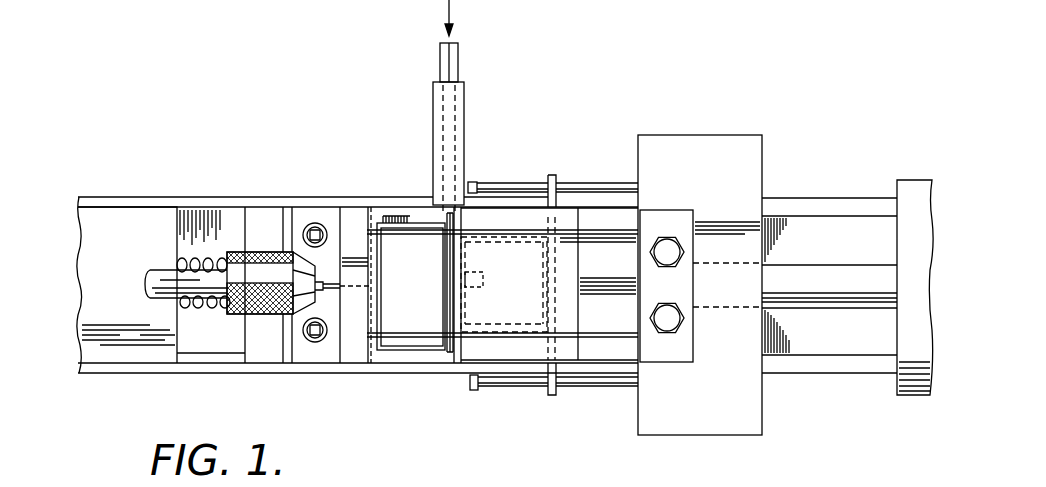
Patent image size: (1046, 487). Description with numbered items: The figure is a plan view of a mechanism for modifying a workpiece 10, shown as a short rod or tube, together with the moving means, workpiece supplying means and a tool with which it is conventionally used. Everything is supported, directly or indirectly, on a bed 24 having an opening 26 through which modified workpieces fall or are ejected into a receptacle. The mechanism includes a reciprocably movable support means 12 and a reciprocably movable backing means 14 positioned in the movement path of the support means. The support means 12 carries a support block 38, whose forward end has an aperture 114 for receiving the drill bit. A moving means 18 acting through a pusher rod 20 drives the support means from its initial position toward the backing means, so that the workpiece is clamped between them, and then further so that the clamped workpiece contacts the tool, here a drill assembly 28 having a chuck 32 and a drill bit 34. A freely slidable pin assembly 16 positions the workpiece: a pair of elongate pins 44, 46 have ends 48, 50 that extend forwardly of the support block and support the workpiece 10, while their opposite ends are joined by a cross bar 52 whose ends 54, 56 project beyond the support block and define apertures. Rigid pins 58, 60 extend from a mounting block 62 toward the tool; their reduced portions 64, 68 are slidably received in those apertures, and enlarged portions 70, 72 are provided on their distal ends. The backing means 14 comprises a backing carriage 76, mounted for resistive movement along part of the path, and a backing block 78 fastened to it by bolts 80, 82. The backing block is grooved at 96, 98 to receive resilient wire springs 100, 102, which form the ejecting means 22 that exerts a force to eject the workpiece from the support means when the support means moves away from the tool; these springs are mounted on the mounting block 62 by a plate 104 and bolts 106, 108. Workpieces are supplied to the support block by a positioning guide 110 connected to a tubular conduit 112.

The workpiece 10 is at (446, 268).
The support means 12 is at (518, 207).
The backing means 14 is at (340, 210).
The pin assembly 16 is at (476, 323).
The moving means 18 is at (912, 180).
The pusher rod 20 is at (838, 265).
The ejecting means 22 is at (638, 327).
The bed 24 is at (208, 373).
The opening 26 is at (416, 307).
The drill assembly 28 is at (158, 270).
The chuck 32 is at (236, 252).
The drill bit 34 is at (321, 281).
The support block 38 is at (456, 363).
The elongate pin 44 is at (476, 244).
The elongate pin 46 is at (537, 328).
The pin end 48 is at (446, 232).
The pin end 50 is at (445, 325).
The cross bar 52 is at (547, 273).
The apertured end 54 is at (552, 175).
The apertured end 56 is at (552, 395).
The rigid pin 58 is at (620, 183).
The rigid pin 60 is at (610, 387).
The mounting block 62 is at (700, 135).
The reduced portion 64 is at (482, 184).
The reduced portion 68 is at (520, 388).
The enlarged portion 70 is at (473, 182).
The enlarged portion 72 is at (472, 392).
The backing carriage 76 is at (245, 336).
The backing block 78 is at (352, 363).
The bolt 80 is at (315, 342).
The bolt 82 is at (312, 222).
The groove 96 is at (356, 238).
The groove 98 is at (356, 333).
The resilient wire spring 100 is at (520, 340).
The resilient wire spring 102 is at (598, 236).
The plate 104 is at (690, 260).
The bolt 106 is at (684, 323).
The bolt 108 is at (672, 237).
The positioning guide 110 is at (465, 108).
The tubular conduit 112 is at (459, 61).
The aperture 114 is at (474, 276).